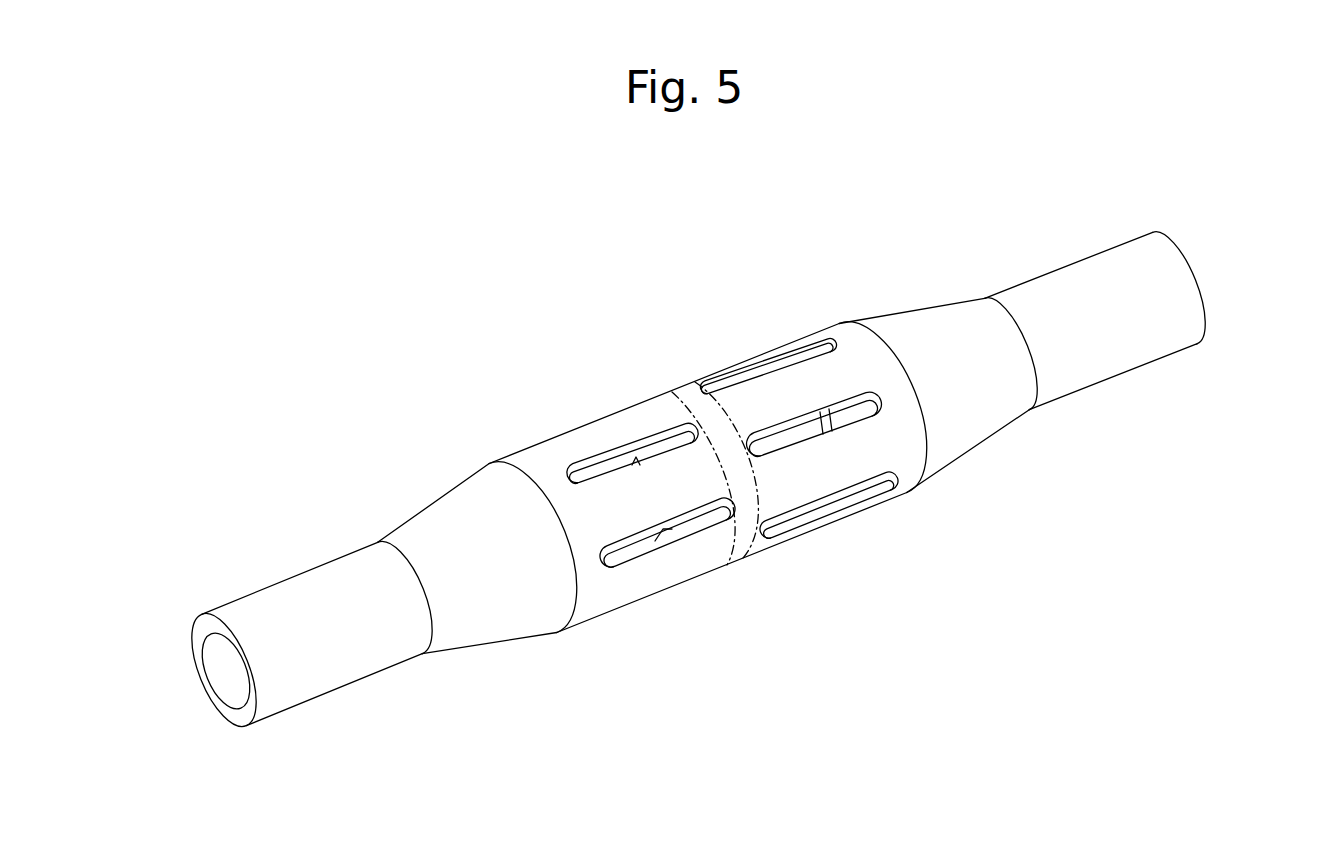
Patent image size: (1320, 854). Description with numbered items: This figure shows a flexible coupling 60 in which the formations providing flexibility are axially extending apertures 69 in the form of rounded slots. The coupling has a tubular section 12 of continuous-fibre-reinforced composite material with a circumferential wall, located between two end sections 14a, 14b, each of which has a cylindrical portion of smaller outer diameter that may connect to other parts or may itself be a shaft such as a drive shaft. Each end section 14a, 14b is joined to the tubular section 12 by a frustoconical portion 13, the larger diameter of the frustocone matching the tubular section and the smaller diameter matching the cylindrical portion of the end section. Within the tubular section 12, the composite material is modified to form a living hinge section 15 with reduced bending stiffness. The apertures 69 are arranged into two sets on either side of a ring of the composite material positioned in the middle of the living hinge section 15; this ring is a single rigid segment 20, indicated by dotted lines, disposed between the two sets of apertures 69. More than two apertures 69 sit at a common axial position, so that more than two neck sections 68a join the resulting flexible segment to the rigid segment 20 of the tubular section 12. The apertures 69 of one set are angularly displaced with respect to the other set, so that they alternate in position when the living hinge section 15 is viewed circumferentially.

The flexible coupling 60 is at (995, 183).
The tubular section 12 is at (777, 568).
The frustoconical portion 13 is at (483, 612).
The end section 14a is at (162, 565).
The end section 14b is at (1240, 411).
The living hinge section 15 is at (976, 560).
The rigid segment 20 is at (678, 398).
The neck section 68a is at (728, 368).
The aperture 69 is at (787, 357).